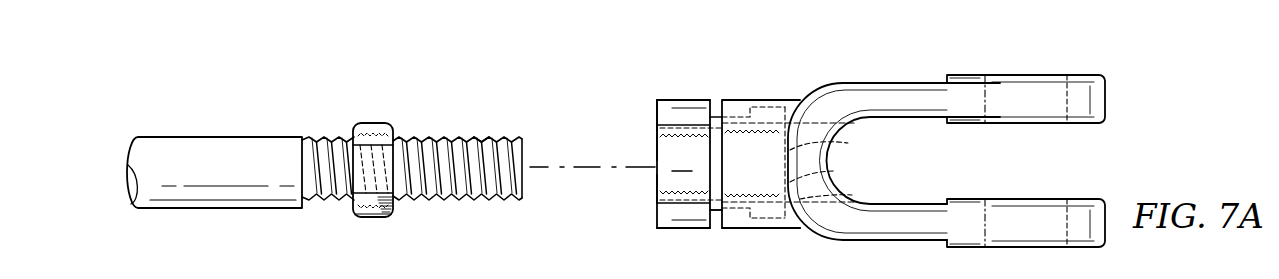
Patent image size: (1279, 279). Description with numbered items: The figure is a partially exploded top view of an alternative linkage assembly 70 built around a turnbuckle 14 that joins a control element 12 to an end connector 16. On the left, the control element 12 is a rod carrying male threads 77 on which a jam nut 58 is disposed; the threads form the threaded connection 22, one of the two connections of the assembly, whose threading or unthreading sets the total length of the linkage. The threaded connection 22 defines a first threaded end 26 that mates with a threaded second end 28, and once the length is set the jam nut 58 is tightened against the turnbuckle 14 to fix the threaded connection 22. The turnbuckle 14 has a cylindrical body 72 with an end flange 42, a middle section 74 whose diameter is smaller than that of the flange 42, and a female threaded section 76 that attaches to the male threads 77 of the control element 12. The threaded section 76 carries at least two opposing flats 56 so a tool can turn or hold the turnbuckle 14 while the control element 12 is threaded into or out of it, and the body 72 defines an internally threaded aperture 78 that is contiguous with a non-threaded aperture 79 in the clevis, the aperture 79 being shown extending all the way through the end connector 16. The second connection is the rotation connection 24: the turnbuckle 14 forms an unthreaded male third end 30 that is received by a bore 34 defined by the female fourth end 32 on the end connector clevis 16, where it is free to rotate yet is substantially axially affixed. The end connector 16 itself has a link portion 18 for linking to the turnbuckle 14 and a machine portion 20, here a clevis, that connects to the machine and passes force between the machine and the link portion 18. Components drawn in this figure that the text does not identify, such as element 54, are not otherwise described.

The control element 12 is at (215, 137).
The threaded connection 22 is at (398, 98).
The first threaded end 26 is at (452, 203).
The male threads 77 is at (478, 135).
The jam nut 58 is at (373, 217).
The turnbuckle 14 is at (681, 99).
The rotation connection 24 is at (690, 79).
The body 72 is at (660, 118).
The internal thread 54 is at (660, 150).
The opposing flats 56 is at (683, 161).
The threaded second end 28 is at (656, 180).
The female threaded section 76 is at (669, 230).
The bore 34 is at (718, 213).
The female fourth end 32 is at (742, 229).
The link portion 18 is at (756, 100).
The middle section 74 is at (735, 108).
The end flange 42 is at (776, 104).
The end connector 16 is at (835, 85).
The third end 30 is at (848, 143).
The internally threaded aperture 78 is at (836, 171).
The non-threaded aperture 79 is at (852, 195).
The linkage assembly 70 is at (955, 59).
The machine portion 20 is at (917, 103).